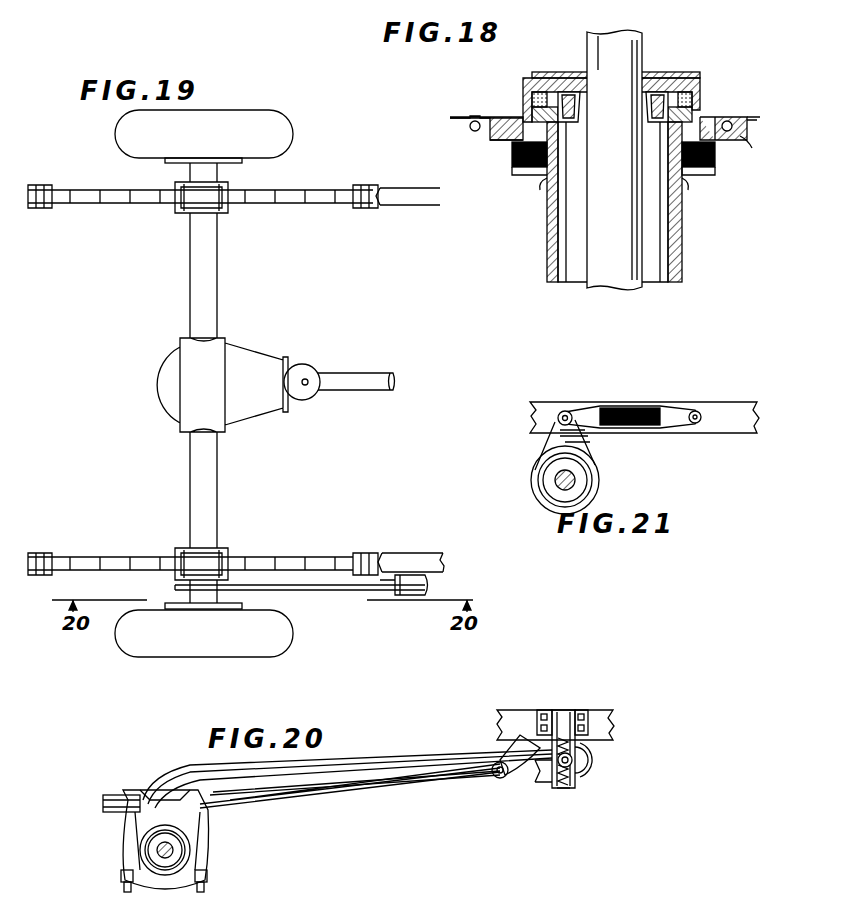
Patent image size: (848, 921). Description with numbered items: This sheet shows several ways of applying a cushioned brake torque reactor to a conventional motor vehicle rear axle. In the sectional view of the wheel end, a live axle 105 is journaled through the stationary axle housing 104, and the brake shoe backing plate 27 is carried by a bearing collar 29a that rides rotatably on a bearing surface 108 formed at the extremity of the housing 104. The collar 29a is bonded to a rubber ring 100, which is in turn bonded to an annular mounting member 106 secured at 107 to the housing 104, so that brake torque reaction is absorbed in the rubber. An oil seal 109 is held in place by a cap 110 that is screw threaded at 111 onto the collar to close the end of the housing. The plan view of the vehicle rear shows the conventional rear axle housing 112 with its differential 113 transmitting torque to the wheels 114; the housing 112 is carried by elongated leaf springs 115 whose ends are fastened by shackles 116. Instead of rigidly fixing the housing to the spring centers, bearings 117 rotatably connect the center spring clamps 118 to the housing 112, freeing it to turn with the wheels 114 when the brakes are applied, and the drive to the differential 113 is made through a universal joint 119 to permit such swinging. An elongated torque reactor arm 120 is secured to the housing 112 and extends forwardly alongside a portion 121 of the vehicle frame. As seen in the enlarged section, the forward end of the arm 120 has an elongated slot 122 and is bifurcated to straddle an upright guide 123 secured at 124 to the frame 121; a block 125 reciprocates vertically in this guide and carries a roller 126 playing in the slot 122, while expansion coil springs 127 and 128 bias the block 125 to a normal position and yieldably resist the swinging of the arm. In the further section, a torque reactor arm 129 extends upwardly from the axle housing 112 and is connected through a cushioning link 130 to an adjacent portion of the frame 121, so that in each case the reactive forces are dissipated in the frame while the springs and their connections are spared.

In FIG. 18, the brake shoe backing plate 27 is at (752, 118).
In FIG. 18, the bearing collar 29a is at (748, 140).
In FIG. 18, the rubber ring 100 is at (512, 160).
In FIG. 18, the stationary axle housing 104 is at (682, 230).
In FIG. 18, the live axle 105 is at (612, 288).
In FIG. 18, the annular mounting member 106 is at (520, 175).
In FIG. 18, the securing point 107 is at (540, 188).
In FIG. 18, the bearing surface 108 is at (685, 128).
In FIG. 18, the oil seal 109 is at (700, 78).
In FIG. 18, the cap 110 is at (523, 86).
In FIG. 18, the screw threads 111 is at (532, 102).
In FIG. 19, the rear axle housing 112 is at (214, 479).
In FIG. 21, the rear axle housing 112 is at (540, 505).
In FIG. 20, the rear axle housing 112 is at (190, 835).
In FIG. 19, the differential 113 is at (160, 400).
In FIG. 19, the wheels 114 is at (290, 132).
In FIG. 19, the leaf springs 115 is at (300, 205).
In FIG. 20, the leaf springs 115 is at (296, 806).
In FIG. 19, the end fastening shackles 116 is at (362, 208).
In FIG. 20, the end fastening shackles 116 is at (500, 760).
In FIG. 19, the bearings 117 is at (192, 213).
In FIG. 20, the center spring clamps 118 is at (207, 875).
In FIG. 19, the universal joint 119 is at (305, 366).
In FIG. 19, the torque reactor arm 120 is at (290, 592).
In FIG. 20, the torque reactor arm 120 is at (367, 780).
In FIG. 19, the vehicle frame 121 is at (410, 205).
In FIG. 21, the vehicle frame 121 is at (735, 395).
In FIG. 20, the vehicle frame 121 is at (613, 720).
In FIG. 20, the elongated slot 122 is at (535, 780).
In FIG. 19, the upright guide 123 is at (426, 586).
In FIG. 20, the upright guide 123 is at (578, 778).
In FIG. 20, the guide fastening 124 is at (588, 710).
In FIG. 20, the block 125 is at (582, 758).
In FIG. 20, the roller 126 is at (545, 785).
In FIG. 20, the expansion coil spring 127 is at (563, 735).
In FIG. 20, the expansion coil spring 128 is at (563, 788).
In FIG. 21, the torque reactor arm 129 is at (548, 441).
In FIG. 21, the link 130 is at (600, 406).